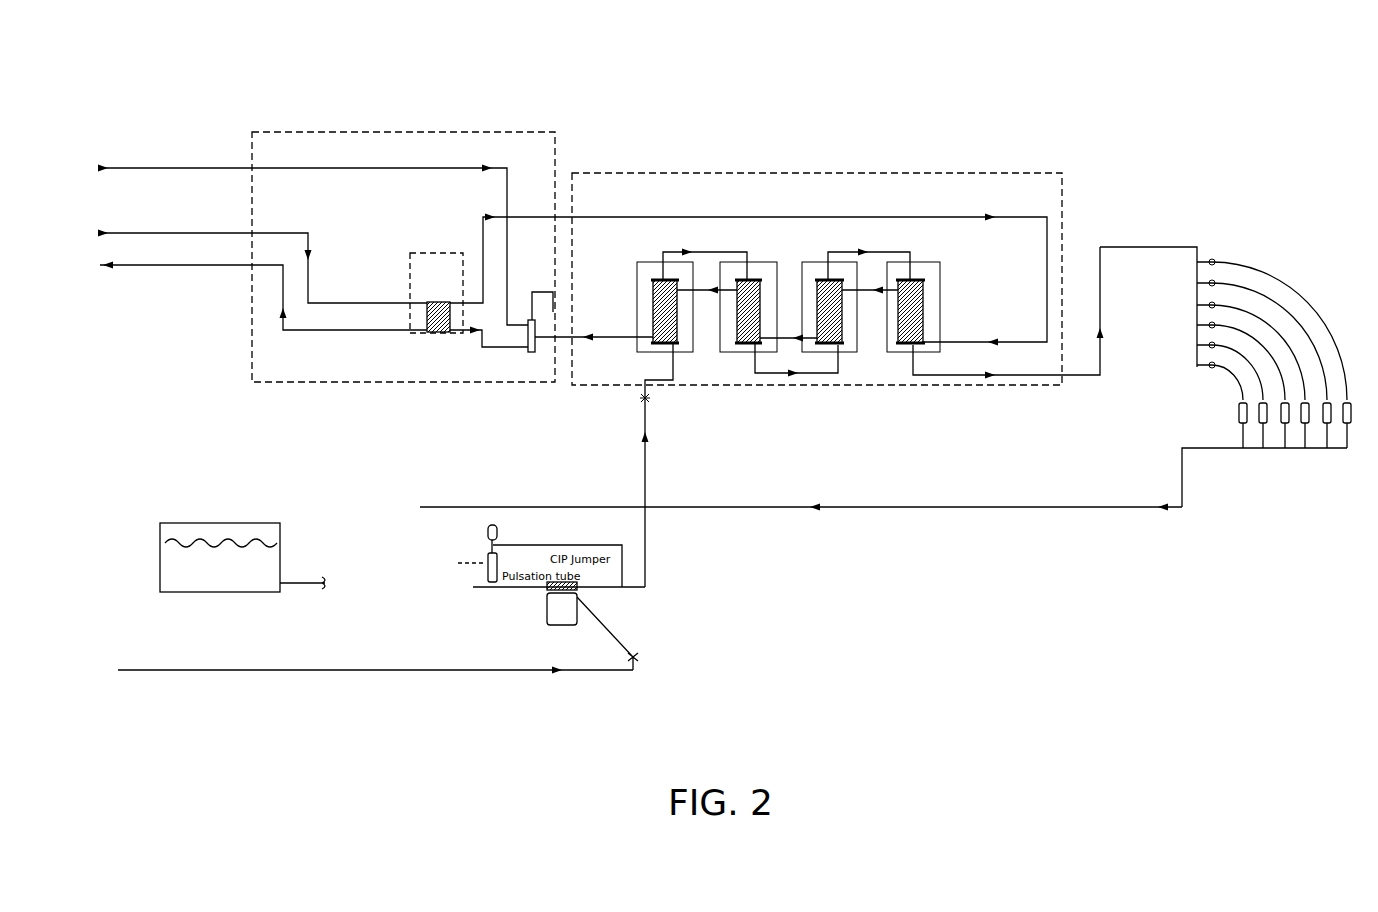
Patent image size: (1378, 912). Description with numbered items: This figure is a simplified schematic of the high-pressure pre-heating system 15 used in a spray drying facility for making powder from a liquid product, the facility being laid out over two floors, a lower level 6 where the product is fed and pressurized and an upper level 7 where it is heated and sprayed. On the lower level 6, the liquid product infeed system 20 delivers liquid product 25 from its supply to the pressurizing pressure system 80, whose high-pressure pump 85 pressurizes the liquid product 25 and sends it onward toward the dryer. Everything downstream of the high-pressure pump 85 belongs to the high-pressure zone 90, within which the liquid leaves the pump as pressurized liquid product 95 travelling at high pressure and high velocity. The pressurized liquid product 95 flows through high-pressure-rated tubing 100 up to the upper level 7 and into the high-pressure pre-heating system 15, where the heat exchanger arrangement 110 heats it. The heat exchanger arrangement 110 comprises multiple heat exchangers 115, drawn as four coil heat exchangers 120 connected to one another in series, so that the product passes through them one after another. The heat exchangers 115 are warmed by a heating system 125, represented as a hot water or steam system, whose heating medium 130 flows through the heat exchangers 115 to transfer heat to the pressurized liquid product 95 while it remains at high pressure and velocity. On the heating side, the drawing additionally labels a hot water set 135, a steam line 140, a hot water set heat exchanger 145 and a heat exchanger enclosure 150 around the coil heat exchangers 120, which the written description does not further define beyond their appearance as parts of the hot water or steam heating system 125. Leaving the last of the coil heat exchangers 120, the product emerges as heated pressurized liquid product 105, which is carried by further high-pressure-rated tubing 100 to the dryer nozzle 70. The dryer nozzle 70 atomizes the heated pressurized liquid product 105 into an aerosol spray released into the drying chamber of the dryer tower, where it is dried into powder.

The lower level 6 is at (767, 592).
The upper level 7 is at (997, 283).
The high-pressure pre-heating system 15 is at (786, 133).
The liquid product infeed system 20 is at (426, 573).
The liquid product 25 is at (192, 580).
The dryer nozzle 70 is at (1243, 423).
The pressurizing pressure system 80 is at (503, 624).
The high-pressure pump 85 is at (540, 608).
The high-pressure zone 90 is at (588, 422).
The pressurized liquid product 95 is at (650, 488).
The high-pressure-rated tubing 100 is at (1118, 245).
The heated pressurized liquid product 105 is at (1148, 245).
The heat exchanger arrangement 110 is at (922, 176).
The heat exchangers 115 is at (655, 352).
The coil heat exchangers 120 is at (653, 297).
The heating system 125 is at (396, 125).
The heating medium 130 is at (535, 205).
The hot water set 135 is at (378, 215).
The steam supply line 140 is at (190, 225).
The hot water set heat exchanger 145 is at (440, 290).
The heat exchanger assembly 150 is at (560, 205).